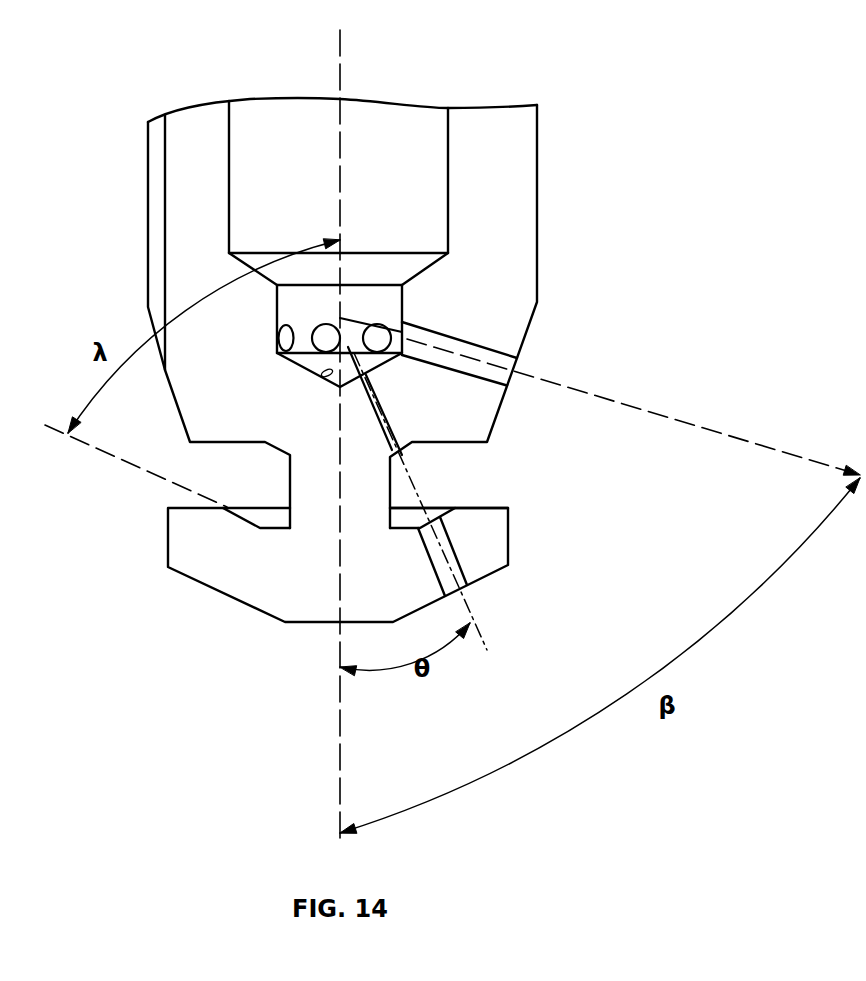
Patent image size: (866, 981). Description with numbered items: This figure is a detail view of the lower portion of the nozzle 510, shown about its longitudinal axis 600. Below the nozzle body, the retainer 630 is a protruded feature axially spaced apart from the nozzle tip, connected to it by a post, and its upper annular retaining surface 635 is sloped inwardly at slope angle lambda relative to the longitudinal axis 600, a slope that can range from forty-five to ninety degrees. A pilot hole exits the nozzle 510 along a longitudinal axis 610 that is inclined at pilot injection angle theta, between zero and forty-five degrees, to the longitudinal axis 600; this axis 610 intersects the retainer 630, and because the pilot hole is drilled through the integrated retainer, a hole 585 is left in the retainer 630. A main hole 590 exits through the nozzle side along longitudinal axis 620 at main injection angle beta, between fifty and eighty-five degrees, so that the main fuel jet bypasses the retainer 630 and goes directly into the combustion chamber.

The nozzle 510 is at (537, 203).
The hole 585 is at (462, 568).
The main hole 590 is at (477, 355).
The longitudinal axis 600 is at (340, 743).
The longitudinal axis of the pilot hole 610 is at (467, 603).
The longitudinal axis of the main hole 620 is at (681, 422).
The retainer 630 is at (188, 545).
The annular retaining surface 635 is at (447, 509).